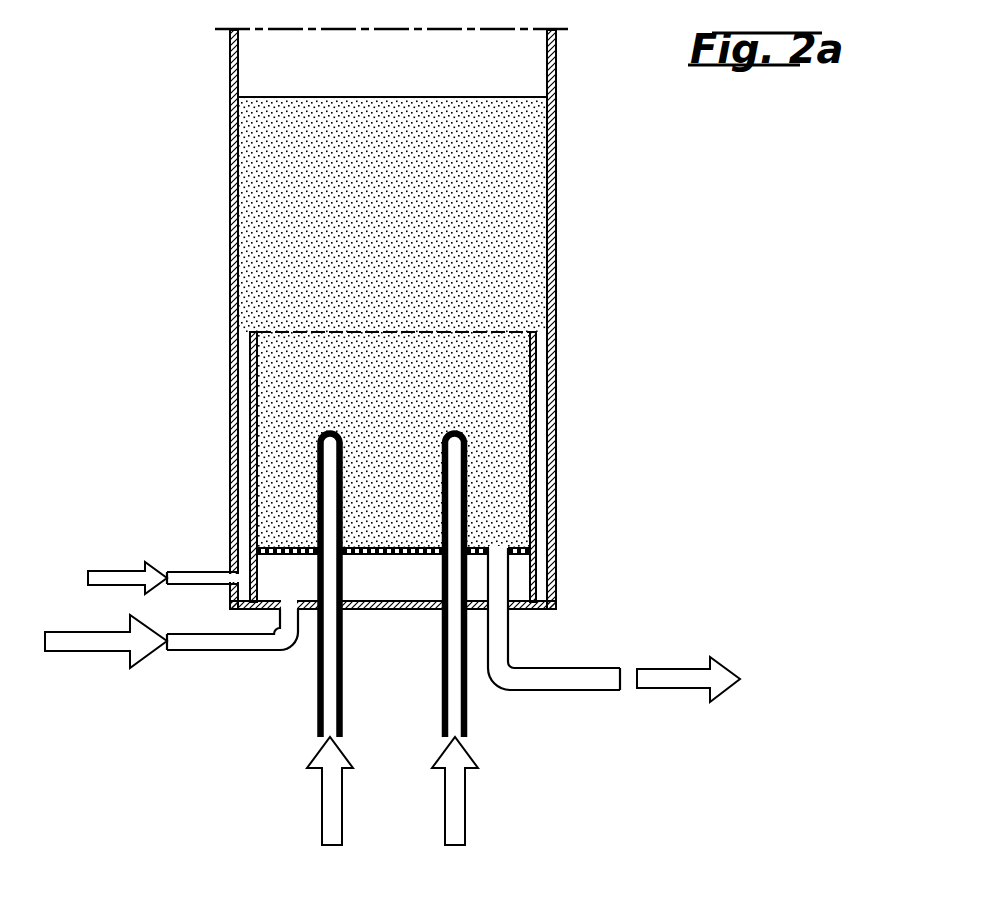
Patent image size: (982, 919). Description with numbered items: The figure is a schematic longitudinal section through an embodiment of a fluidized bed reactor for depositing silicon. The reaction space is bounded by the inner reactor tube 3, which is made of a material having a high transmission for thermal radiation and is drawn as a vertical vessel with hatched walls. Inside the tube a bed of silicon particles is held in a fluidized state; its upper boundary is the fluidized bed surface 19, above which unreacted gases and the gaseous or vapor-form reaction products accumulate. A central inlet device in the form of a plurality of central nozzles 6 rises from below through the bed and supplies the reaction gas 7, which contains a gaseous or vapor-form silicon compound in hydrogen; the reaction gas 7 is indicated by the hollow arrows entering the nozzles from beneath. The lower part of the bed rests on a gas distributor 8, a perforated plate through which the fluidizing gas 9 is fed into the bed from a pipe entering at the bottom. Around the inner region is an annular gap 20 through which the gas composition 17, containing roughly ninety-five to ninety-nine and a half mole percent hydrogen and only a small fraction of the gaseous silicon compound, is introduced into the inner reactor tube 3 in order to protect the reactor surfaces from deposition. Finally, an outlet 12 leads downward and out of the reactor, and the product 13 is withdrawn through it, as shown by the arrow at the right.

The inner reactor tube 3 is at (555, 209).
The fluidized bed surface 19 is at (517, 96).
The annular gap 20 is at (540, 361).
The central nozzles 6 is at (441, 442).
The gas distributor 8 is at (383, 548).
The gas composition 17 is at (120, 577).
The fluidizing gas 9 is at (100, 642).
The outlet 12 is at (565, 683).
The product 13 is at (661, 683).
The reaction gas 7 is at (458, 778).